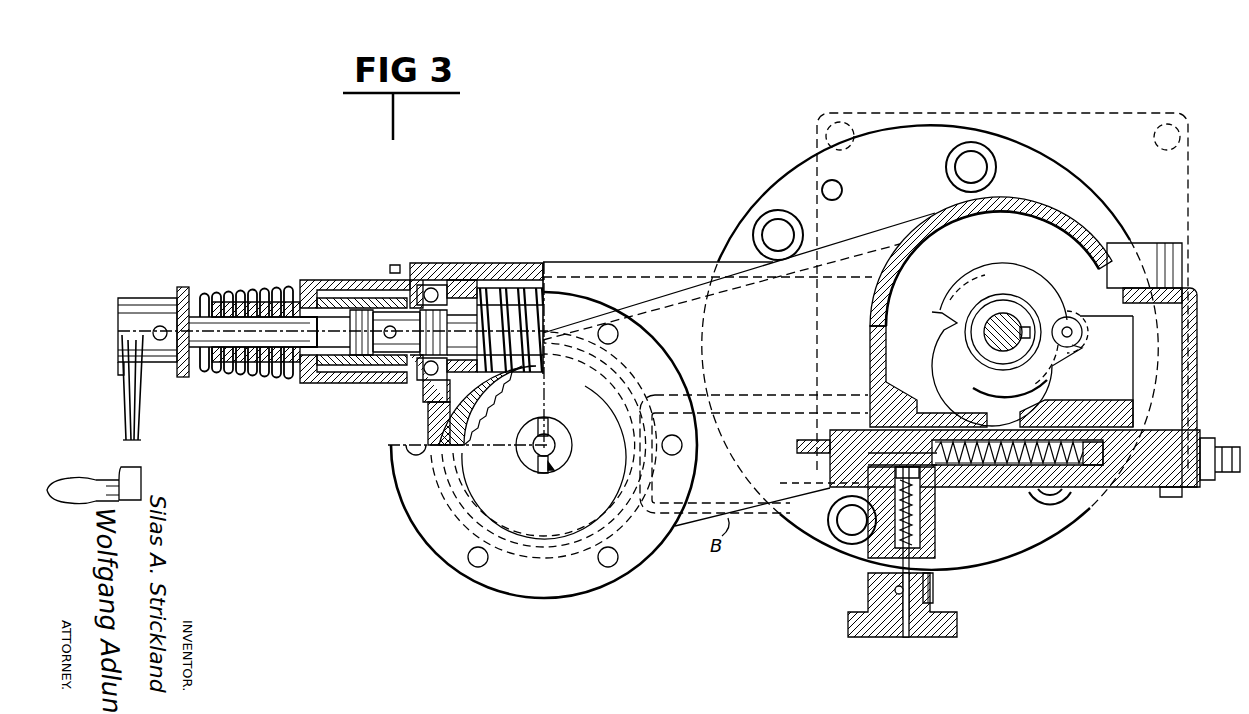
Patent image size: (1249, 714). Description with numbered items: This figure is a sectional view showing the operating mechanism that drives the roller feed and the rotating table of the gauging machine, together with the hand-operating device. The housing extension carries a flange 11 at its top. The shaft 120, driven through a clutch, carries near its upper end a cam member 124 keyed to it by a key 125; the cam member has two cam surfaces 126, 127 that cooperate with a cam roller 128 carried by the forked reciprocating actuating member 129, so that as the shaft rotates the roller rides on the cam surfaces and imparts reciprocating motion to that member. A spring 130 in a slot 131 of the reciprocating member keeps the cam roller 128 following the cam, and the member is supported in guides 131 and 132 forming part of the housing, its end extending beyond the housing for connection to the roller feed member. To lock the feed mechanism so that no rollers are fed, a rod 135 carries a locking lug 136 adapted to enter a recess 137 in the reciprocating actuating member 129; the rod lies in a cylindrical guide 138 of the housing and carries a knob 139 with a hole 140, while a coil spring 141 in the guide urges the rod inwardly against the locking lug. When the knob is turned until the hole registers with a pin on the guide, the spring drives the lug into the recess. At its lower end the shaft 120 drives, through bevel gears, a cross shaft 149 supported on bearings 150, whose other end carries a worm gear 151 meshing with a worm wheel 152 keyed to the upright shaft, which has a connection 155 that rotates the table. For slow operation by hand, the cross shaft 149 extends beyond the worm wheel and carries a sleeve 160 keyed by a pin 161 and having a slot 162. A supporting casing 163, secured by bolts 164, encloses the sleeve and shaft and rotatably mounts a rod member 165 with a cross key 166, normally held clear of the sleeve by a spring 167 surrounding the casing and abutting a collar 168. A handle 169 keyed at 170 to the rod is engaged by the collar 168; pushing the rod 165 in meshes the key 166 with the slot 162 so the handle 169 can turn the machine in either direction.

The flange 11 is at (410, 494).
The shaft 120 is at (1006, 316).
The cam member 124 is at (980, 300).
The key 125 is at (1030, 322).
The cam surface 126 is at (937, 305).
The cam surface 127 is at (1040, 380).
The cam roller 128 is at (1068, 316).
The reciprocating actuating member 129 is at (1130, 288).
The spring 130 is at (1055, 497).
The slot 131 is at (940, 424).
The guide 132 is at (1000, 487).
The rod 135 is at (870, 566).
The locking lug 136 is at (936, 497).
The recess 137 is at (830, 462).
The cylindrical guide 138 is at (935, 545).
The knob 139 is at (862, 630).
The hole 140 is at (936, 590).
The coil spring 141 is at (917, 515).
The cross shaft 149 is at (474, 300).
The bearings 150 is at (448, 423).
The worm gear 151 is at (545, 285).
The worm wheel 152 is at (445, 430).
The connection 155 is at (552, 462).
The sleeve 160 is at (396, 262).
The pin 161 is at (392, 345).
The slot 162 is at (352, 300).
The supporting casing 163 is at (310, 385).
The bolts 164 is at (436, 286).
The rod member 165 is at (220, 325).
The cross key 166 is at (316, 300).
The spring 167 is at (243, 378).
The collar 168 is at (183, 378).
The handle 169 is at (126, 378).
The key 170 is at (160, 325).